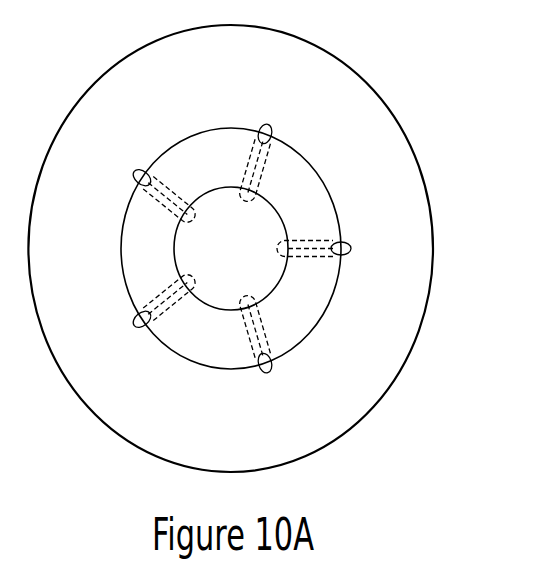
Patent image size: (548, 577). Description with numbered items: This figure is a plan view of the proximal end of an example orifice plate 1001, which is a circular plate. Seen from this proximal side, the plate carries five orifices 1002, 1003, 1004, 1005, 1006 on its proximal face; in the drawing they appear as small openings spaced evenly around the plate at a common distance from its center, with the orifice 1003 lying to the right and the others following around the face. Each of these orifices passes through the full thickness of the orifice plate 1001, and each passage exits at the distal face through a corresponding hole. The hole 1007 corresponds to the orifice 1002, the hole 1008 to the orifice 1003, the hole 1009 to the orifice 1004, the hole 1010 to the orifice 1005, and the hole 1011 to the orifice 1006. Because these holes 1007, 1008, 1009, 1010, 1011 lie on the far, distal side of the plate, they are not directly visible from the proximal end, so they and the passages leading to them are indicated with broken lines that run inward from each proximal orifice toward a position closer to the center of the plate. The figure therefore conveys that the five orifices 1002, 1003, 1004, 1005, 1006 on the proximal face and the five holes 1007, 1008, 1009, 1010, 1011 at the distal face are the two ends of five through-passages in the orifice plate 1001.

The orifice plate 1001 is at (362, 80).
The orifice 1002 is at (265, 146).
The orifice 1003 is at (341, 258).
The orifice 1004 is at (263, 355).
The orifice 1005 is at (170, 352).
The orifice 1006 is at (143, 190).
The hole 1007 is at (238, 188).
The hole 1008 is at (280, 236).
The hole 1009 is at (267, 297).
The hole 1010 is at (190, 281).
The hole 1011 is at (192, 218).